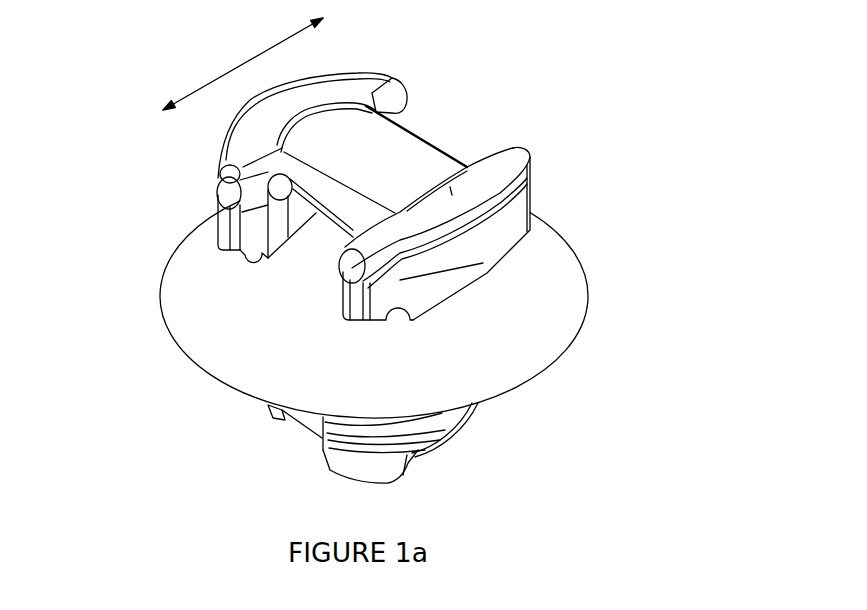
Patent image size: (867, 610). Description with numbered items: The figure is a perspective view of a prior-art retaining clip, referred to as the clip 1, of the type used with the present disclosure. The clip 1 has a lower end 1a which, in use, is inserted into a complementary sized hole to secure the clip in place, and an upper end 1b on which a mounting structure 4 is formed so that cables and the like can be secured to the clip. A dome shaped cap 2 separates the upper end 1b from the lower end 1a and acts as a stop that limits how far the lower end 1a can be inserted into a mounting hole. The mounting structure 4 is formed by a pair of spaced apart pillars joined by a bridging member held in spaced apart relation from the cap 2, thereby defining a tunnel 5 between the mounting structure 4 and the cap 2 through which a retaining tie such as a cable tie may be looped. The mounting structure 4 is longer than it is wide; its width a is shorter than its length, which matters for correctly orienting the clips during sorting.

The clip 1 is at (131, 340).
The lower end 1a is at (295, 458).
The upper end 1b is at (453, 125).
The dome shaped cap 2 is at (463, 337).
The mounting structure 4 is at (532, 170).
The tunnel 5 is at (302, 236).
The width a is at (243, 64).